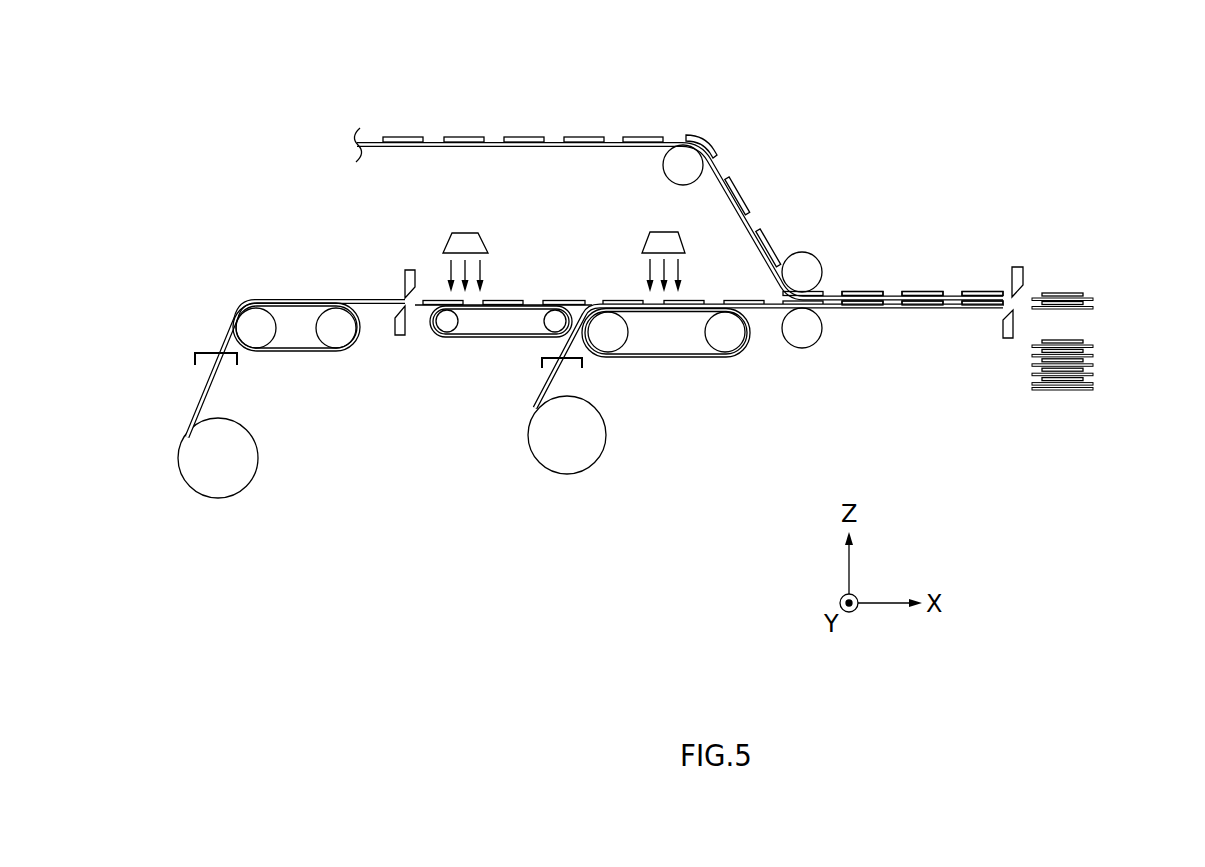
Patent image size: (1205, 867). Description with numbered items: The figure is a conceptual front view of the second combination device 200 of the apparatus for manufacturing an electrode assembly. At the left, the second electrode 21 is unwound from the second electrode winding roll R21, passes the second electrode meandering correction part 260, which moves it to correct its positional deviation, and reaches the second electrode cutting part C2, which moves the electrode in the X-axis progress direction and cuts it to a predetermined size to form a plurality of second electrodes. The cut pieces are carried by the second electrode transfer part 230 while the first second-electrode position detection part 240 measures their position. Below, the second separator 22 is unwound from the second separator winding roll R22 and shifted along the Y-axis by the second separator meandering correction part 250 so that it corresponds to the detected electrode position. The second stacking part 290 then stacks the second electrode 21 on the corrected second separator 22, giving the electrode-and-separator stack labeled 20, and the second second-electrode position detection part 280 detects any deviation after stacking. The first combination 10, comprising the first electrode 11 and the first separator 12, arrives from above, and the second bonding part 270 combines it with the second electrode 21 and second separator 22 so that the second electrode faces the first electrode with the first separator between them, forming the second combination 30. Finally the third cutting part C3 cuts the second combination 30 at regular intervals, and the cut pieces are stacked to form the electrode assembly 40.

The first combination 10 is at (678, 176).
The first electrode 11 is at (403, 136).
The first separator 12 is at (435, 136).
The second electrode laminate 20 is at (713, 355).
The second electrode 21 is at (613, 298).
The second separator 22 is at (558, 384).
The second combination 30 is at (866, 273).
The electrode assembly 40 is at (1110, 347).
The second combination device 200 is at (232, 201).
The second electrode transfer part 230 is at (485, 356).
The first second-electrode position detection part 240 is at (465, 231).
The second separator meandering correction part 250 is at (582, 360).
The second electrode meandering correction part 260 is at (195, 358).
The second bonding part 270 is at (801, 233).
The second second-electrode position detection part 280 is at (660, 228).
The second stacking part 290 is at (697, 379).
The second electrode cutting part C2 is at (401, 356).
The third cutting part C3 is at (1008, 362).
The second electrode winding roll R21 is at (218, 490).
The second separator winding roll R22 is at (567, 470).